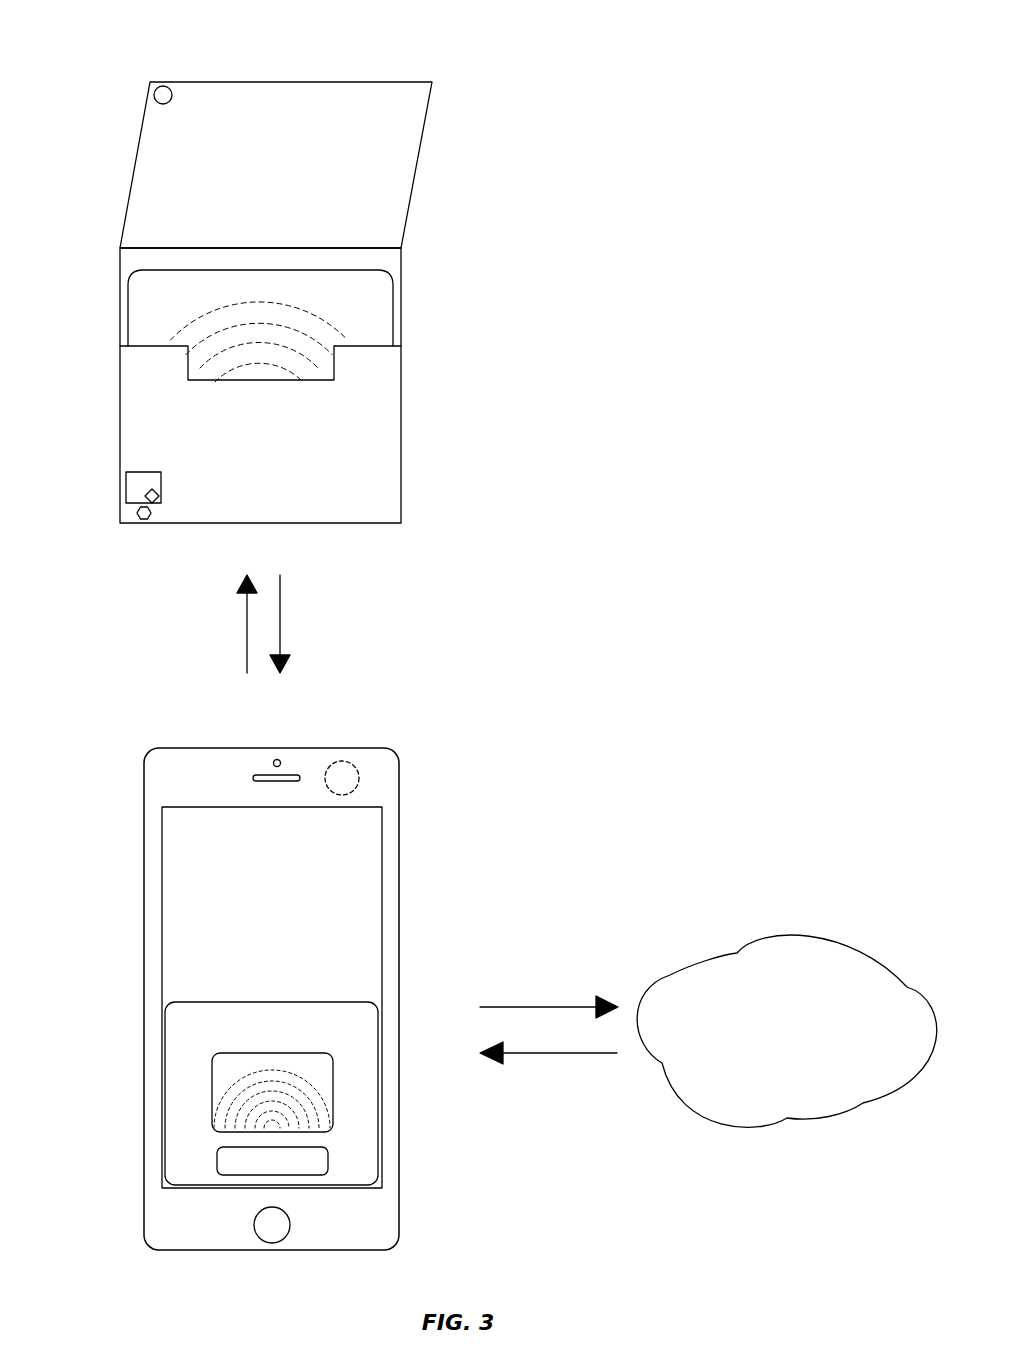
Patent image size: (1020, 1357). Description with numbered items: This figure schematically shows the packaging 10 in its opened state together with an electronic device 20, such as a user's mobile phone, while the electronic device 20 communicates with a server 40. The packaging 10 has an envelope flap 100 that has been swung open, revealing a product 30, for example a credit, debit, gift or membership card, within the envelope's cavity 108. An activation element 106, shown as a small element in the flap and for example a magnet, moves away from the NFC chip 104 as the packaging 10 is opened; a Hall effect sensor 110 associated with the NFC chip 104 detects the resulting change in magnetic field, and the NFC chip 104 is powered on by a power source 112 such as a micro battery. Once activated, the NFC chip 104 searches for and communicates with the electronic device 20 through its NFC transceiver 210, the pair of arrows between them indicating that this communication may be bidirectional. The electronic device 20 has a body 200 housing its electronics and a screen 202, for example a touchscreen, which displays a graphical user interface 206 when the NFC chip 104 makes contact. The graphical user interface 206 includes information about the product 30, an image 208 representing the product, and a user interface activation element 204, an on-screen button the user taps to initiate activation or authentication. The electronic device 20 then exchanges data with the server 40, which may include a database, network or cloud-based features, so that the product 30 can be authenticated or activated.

The packaging 10 is at (112, 111).
The electronic device 20 is at (426, 802).
The product 30 is at (150, 323).
The server 40 is at (775, 1036).
The envelope flap 100 is at (276, 167).
The NFC chip 104 is at (126, 488).
The activation element 106 is at (164, 86).
The envelope's cavity 108 is at (122, 347).
The Hall effect sensor 110 is at (140, 519).
The power source 112 is at (159, 500).
The body 200 is at (389, 921).
The screen 202 is at (255, 911).
The user interface activation element 204 is at (304, 1160).
The graphical user interface 206 is at (343, 1025).
The image 208 is at (328, 1082).
The NFC transceiver 210 is at (352, 765).